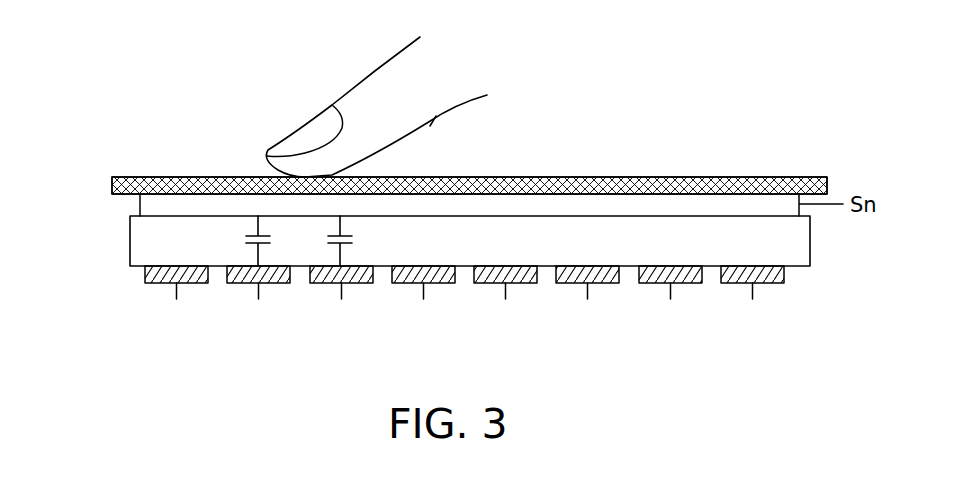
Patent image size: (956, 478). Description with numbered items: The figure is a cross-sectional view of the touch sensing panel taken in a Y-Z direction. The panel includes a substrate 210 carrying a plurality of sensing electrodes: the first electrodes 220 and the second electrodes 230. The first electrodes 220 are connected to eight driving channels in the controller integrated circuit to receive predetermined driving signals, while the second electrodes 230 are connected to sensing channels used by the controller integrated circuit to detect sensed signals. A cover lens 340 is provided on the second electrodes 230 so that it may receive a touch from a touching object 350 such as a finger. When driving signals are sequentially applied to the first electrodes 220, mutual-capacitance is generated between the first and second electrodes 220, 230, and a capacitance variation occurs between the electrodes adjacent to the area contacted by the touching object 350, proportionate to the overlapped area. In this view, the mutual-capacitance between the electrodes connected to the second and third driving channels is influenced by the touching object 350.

The touching object 350 is at (384, 88).
The cover lens 340 is at (602, 176).
The second electrodes 230 is at (146, 205).
The substrate 210 is at (138, 238).
The first electrodes 220 is at (144, 282).